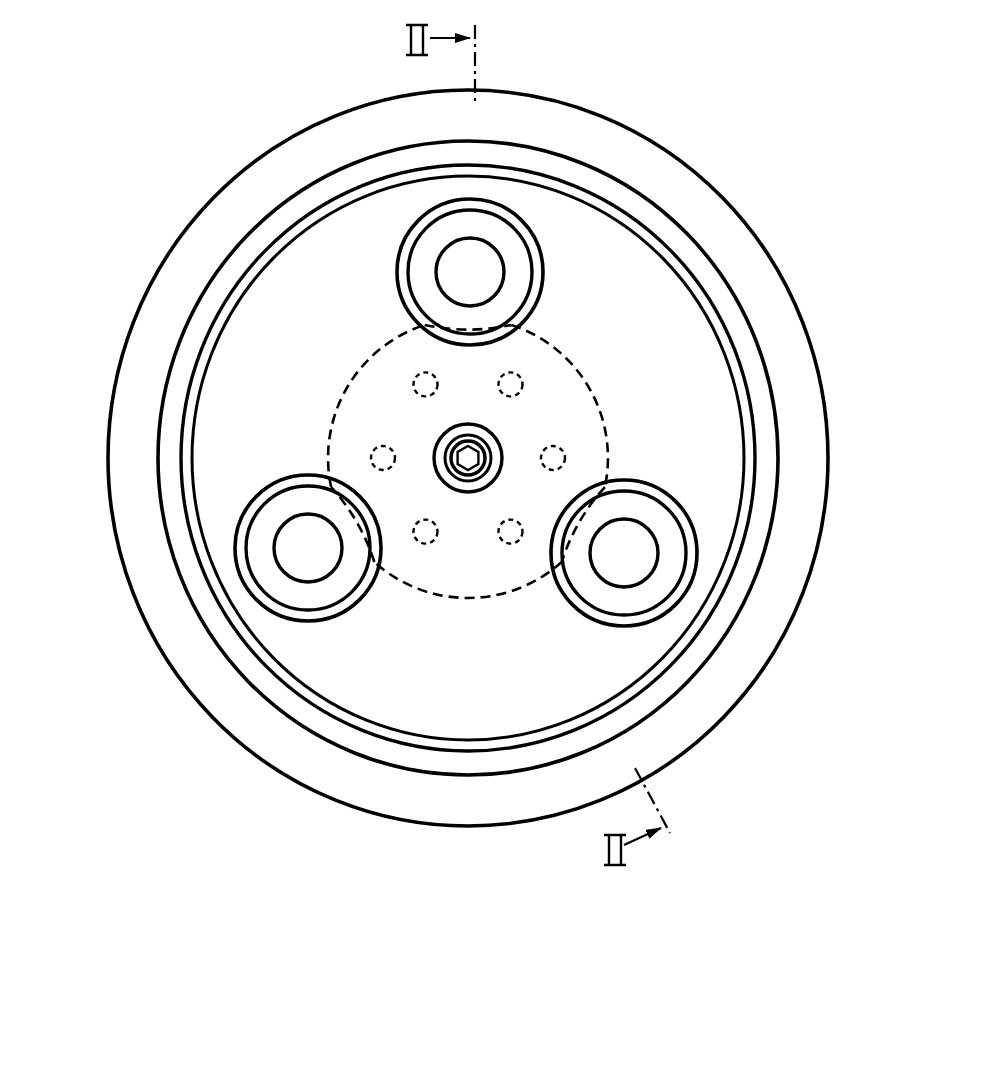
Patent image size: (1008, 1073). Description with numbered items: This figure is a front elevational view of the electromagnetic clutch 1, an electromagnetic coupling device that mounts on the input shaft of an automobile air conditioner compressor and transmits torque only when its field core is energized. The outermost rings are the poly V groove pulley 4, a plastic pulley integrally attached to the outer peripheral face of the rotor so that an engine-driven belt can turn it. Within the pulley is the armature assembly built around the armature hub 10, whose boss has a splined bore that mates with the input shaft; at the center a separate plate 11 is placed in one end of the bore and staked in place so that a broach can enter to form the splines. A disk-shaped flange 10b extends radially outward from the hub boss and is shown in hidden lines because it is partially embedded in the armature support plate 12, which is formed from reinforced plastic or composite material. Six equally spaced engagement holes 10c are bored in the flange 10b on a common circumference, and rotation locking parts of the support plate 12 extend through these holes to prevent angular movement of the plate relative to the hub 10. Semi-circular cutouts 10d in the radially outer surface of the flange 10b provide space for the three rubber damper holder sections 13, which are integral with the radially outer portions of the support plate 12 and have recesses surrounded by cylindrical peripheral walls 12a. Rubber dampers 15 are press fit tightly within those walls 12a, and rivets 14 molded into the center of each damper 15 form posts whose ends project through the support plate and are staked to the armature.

The electromagnetic clutch 1 is at (692, 125).
The poly V groove pulley 4 is at (720, 224).
The armature hub 10 is at (479, 483).
The disk-shaped flange 10b is at (600, 396).
The engagement holes 10c is at (417, 378).
The semi-circular cutouts 10d is at (488, 325).
The plate 11 is at (462, 494).
The armature support plate 12 is at (712, 340).
The cylindrical peripheral walls 12a is at (387, 236).
The rubber damper holder sections 13 is at (459, 424).
The rivets 14 is at (452, 252).
The rubber dampers 15 is at (500, 230).